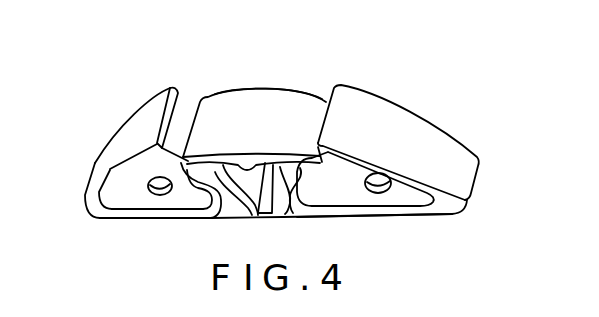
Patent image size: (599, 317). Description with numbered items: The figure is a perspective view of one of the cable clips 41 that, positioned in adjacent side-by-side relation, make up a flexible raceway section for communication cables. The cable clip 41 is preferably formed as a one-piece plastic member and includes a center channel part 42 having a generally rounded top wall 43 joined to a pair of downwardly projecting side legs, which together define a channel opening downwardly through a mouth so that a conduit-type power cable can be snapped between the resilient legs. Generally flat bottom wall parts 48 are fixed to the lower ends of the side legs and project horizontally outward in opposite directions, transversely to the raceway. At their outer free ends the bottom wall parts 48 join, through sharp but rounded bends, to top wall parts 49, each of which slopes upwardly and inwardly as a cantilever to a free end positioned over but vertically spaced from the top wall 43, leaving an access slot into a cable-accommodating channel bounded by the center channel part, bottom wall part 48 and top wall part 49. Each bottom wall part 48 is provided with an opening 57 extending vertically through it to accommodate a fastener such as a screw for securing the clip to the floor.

The cable clip 41 is at (465, 108).
The center channel part 42 is at (236, 78).
The top wall 43 is at (265, 100).
The bottom wall part 48 is at (190, 203).
The top wall part 49 is at (130, 135).
The opening 57 is at (158, 193).